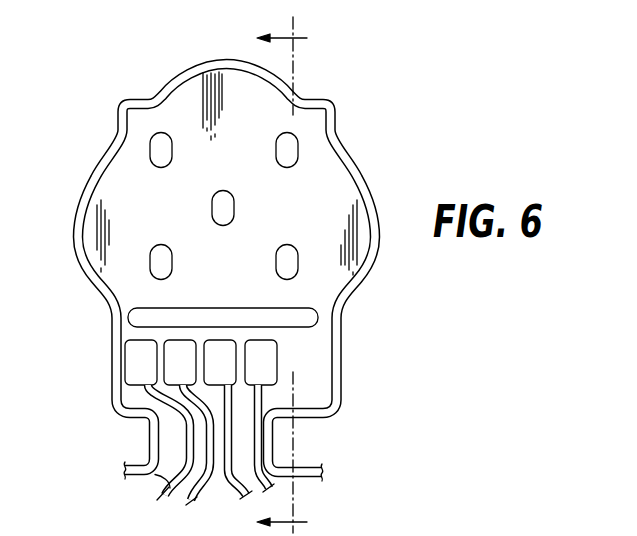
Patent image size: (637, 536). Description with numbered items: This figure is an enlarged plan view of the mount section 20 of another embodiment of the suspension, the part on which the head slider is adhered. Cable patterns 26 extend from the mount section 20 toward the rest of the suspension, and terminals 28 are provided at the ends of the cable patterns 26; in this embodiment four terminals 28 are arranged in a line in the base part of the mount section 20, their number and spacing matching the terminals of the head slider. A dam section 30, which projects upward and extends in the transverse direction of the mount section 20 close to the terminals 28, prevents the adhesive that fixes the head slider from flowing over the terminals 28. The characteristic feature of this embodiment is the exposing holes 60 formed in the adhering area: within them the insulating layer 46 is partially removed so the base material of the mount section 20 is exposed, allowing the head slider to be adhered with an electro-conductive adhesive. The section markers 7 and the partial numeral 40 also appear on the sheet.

The mount section 20 is at (352, 135).
The insulating layer 46 is at (333, 188).
The exposing holes 60 is at (150, 148).
The dam section 30 is at (318, 322).
The terminals 28 is at (137, 360).
The cable patterns 26 is at (160, 490).
The section line 7- 7 is at (272, 276).
The element 40 is at (558, 530).